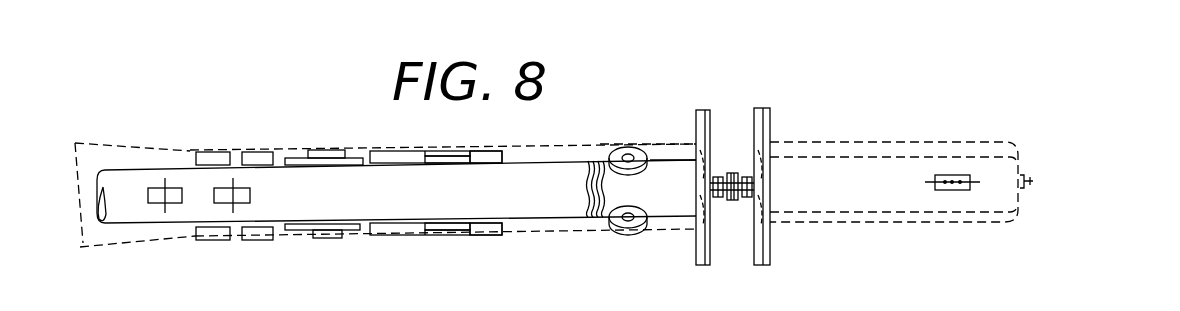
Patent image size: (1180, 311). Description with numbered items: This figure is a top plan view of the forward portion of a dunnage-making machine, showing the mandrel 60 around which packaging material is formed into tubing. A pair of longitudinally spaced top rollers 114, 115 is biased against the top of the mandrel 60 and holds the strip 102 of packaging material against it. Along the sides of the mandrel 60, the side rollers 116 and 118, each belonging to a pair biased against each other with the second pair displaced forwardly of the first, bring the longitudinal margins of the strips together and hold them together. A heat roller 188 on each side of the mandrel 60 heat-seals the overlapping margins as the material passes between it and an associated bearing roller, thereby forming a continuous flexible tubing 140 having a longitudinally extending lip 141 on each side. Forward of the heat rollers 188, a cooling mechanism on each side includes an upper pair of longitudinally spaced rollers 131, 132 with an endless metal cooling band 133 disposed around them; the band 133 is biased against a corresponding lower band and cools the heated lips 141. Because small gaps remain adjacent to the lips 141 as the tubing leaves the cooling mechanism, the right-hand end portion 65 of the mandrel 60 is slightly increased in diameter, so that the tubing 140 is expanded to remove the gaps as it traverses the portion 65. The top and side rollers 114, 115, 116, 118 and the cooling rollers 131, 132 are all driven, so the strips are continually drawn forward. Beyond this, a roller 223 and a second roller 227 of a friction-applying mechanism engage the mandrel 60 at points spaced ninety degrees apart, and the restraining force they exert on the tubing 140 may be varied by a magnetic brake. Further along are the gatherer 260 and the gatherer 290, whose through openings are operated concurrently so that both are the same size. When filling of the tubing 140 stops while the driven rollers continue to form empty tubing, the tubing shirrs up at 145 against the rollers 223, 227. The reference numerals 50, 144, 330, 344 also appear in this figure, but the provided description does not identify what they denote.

The surgical instrument assembly 50 is at (1062, 107).
The mandrel 60 is at (537, 170).
The right-hand end portion 65 is at (674, 205).
The strip of packaging material 102 is at (97, 250).
The top roller 114 is at (157, 198).
The top roller 115 is at (245, 195).
The side roller 116 is at (210, 160).
The side roller 118 is at (258, 157).
The upper roller 131 is at (390, 150).
The upper roller 132 is at (498, 148).
The endless metal cooling band 133 is at (428, 152).
The continuous flexible tubing 140 is at (668, 138).
The longitudinally-extending lip 141 is at (585, 146).
The rear housing 144 is at (860, 170).
The shirred tubing location 145 is at (603, 218).
The heat roller 188 is at (357, 158).
The roller 223 is at (632, 147).
The second roller 227 is at (625, 223).
The gatherer 260 is at (697, 265).
The gatherer 290 is at (767, 262).
The coupling 330 is at (733, 122).
The cable connector 344 is at (989, 302).